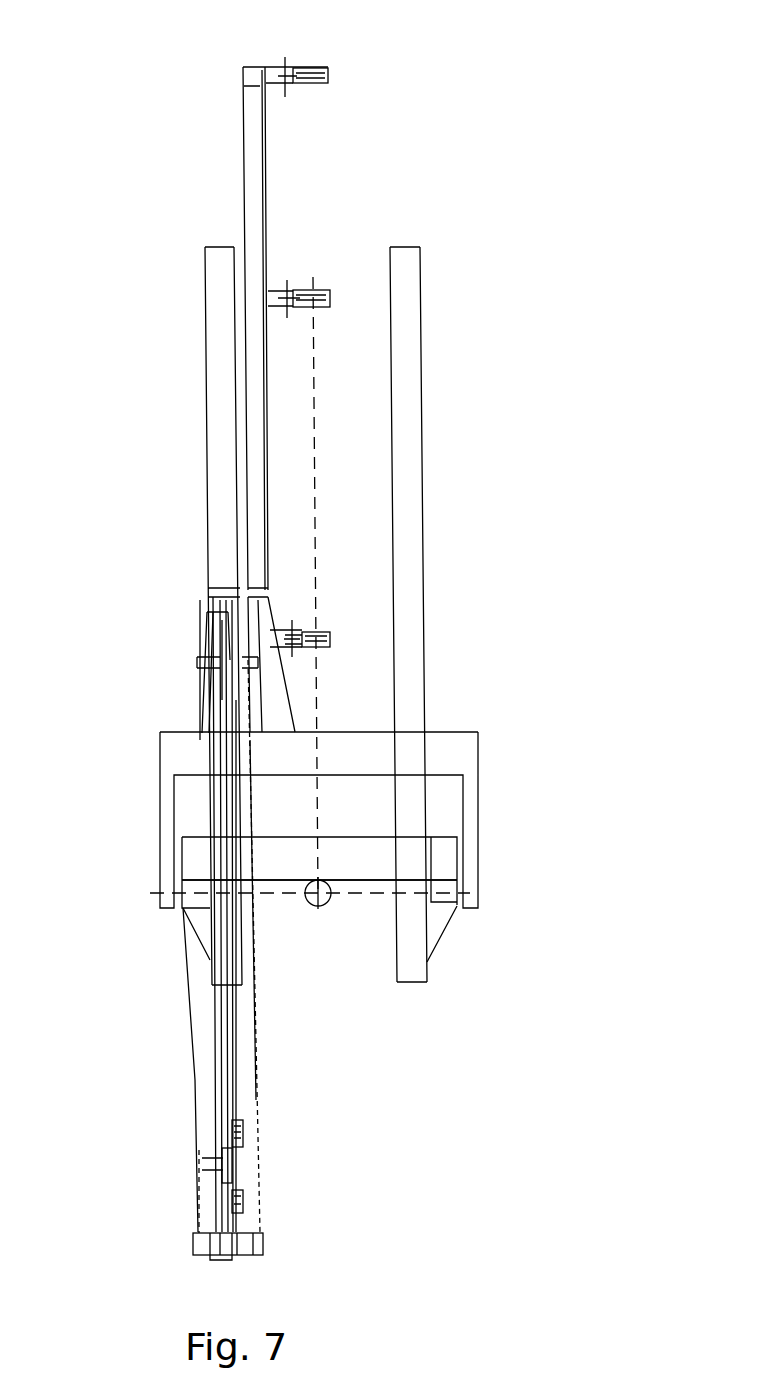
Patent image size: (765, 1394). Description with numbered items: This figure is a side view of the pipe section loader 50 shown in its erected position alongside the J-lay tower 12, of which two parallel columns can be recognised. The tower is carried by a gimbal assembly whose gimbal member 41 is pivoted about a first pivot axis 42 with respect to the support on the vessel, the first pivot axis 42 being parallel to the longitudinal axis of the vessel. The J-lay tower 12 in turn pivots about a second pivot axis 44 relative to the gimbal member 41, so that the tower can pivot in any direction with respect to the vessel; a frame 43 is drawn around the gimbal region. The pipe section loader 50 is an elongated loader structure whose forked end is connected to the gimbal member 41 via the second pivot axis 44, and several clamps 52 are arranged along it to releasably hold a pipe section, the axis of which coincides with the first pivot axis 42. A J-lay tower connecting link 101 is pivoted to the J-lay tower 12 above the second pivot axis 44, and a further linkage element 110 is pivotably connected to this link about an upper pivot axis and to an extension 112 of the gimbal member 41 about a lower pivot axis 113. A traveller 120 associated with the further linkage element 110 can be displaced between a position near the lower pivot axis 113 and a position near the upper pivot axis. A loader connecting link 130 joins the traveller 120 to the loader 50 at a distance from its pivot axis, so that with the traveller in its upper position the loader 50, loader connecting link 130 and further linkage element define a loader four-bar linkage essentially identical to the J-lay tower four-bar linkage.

The J-lay tower 12 is at (220, 338).
The gimbal member 41 is at (440, 857).
The first pivot axis 42 is at (318, 907).
The frame 43 is at (173, 815).
The second pivot axis 44 is at (268, 893).
The pipe section loader 50 is at (257, 147).
The clamps 52 is at (310, 67).
The J-lay tower connecting link 101 is at (203, 645).
The further linkage element 110 is at (217, 1007).
The extension of the gimbal member 112 is at (198, 1048).
The lower pivot axis 113 is at (202, 1172).
The traveller 120 is at (178, 686).
The loader connecting link 130 is at (257, 613).